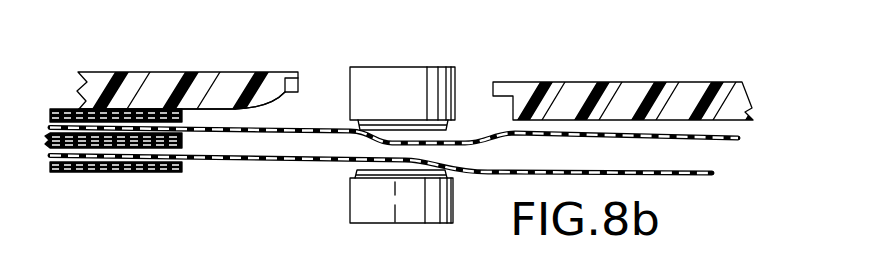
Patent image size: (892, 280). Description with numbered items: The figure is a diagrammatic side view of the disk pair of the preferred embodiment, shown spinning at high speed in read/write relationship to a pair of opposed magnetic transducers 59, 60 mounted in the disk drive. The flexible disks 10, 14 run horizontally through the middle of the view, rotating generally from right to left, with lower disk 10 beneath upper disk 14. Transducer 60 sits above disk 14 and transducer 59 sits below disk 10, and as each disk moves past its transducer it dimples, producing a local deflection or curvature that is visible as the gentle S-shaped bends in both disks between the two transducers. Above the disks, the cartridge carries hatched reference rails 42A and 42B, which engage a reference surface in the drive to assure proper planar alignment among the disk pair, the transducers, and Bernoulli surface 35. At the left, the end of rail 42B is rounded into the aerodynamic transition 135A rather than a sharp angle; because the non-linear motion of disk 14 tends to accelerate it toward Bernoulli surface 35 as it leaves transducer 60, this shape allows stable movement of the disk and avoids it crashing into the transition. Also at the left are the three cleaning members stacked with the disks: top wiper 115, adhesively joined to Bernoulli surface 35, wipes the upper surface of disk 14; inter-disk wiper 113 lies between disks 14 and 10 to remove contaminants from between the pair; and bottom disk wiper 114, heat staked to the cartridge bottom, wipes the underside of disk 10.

The disk 10 is at (701, 177).
The disk 14 is at (724, 141).
The Bernoulli surface 35 is at (210, 108).
The reference rail 42A is at (498, 83).
The reference rail 42B is at (293, 78).
The transducer 59 is at (449, 224).
The transducer 60 is at (395, 120).
The inter-disk wiper 113 is at (48, 131).
The bottom disk wiper 114 is at (58, 166).
The top wiper 115 is at (66, 110).
The transition 135A is at (271, 101).